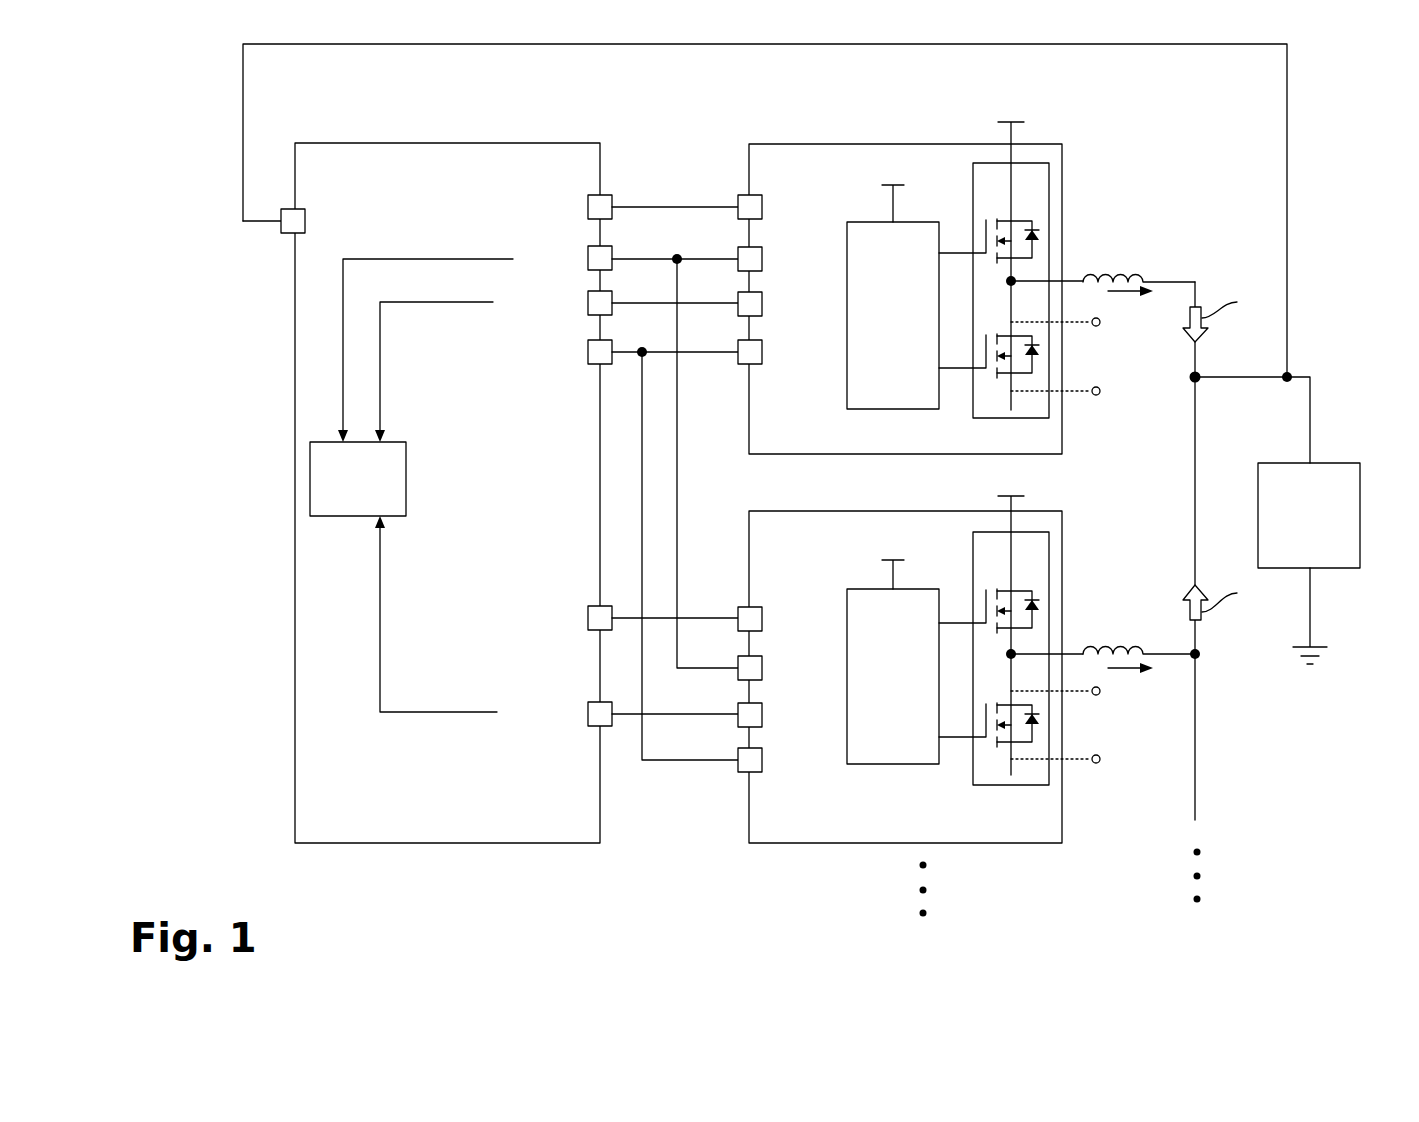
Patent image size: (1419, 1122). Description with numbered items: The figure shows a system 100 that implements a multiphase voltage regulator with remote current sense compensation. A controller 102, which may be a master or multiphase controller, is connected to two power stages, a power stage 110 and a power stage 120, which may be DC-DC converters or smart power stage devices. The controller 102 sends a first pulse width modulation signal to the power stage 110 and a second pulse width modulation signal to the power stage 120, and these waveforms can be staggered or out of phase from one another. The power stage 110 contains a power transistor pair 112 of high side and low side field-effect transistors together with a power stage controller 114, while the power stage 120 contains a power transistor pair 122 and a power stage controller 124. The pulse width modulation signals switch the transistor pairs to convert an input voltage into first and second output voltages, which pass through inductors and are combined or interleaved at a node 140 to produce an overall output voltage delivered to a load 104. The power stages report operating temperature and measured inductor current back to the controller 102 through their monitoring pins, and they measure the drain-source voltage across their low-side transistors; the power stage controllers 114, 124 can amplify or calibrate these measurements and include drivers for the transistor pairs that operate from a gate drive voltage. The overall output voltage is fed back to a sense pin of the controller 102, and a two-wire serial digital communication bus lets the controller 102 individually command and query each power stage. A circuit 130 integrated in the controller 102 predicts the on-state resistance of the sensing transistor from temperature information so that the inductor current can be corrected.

The system 100 is at (388, 923).
The controller 102 is at (530, 181).
The load 104 is at (1285, 514).
The power stage 110 is at (749, 175).
The power transistor pair 112 is at (1032, 163).
The power stage controller 114 is at (876, 327).
The power stage 120 is at (792, 843).
The power transistor pair 122 is at (1032, 532).
The power stage controller 124 is at (876, 694).
The circuit 130 is at (454, 451).
The node 140 is at (1193, 378).